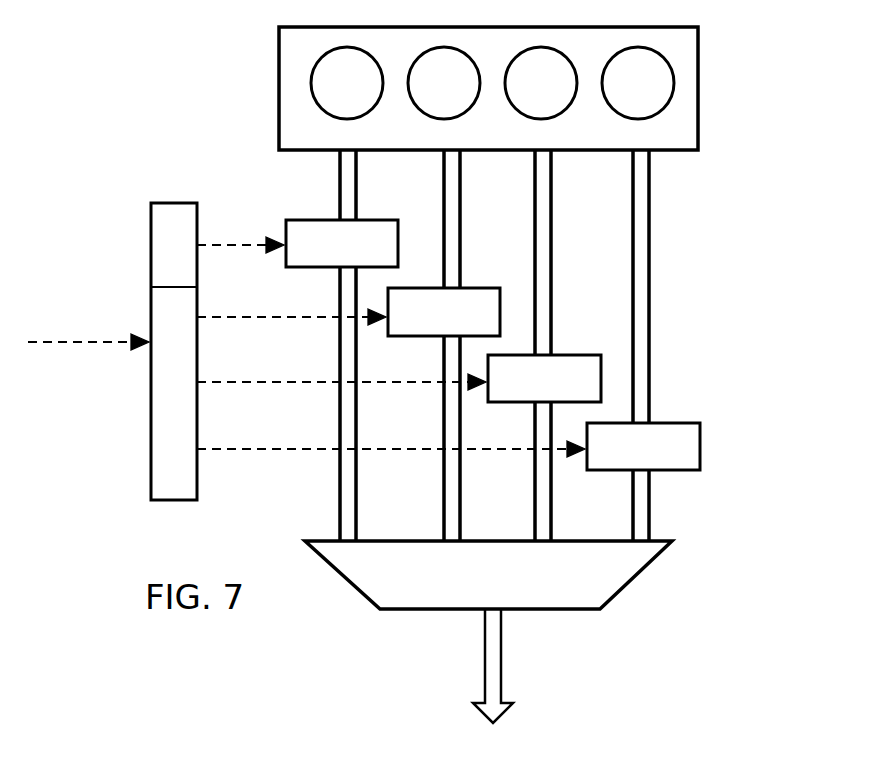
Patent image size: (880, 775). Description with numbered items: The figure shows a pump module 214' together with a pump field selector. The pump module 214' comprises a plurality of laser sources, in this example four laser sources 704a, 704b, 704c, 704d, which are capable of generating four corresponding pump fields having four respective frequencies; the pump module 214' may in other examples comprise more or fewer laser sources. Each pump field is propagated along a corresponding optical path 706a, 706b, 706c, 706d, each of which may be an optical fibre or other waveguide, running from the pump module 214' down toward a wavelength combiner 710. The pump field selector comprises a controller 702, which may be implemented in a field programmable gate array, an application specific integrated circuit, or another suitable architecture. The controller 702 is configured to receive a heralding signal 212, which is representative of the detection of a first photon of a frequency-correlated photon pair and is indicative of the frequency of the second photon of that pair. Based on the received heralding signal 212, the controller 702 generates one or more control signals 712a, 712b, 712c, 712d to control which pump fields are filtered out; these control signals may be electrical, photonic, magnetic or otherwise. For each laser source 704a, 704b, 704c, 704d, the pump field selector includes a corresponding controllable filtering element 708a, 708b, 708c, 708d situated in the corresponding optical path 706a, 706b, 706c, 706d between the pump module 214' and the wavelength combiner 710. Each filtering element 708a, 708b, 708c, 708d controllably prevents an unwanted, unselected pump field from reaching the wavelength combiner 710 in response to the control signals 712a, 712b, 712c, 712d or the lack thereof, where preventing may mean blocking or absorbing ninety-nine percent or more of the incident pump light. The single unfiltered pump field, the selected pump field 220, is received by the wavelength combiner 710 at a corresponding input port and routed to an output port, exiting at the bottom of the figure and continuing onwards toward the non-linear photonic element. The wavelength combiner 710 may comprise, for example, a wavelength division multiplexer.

The pump module 214' is at (547, 88).
The laser source 704a is at (347, 83).
The laser source 704b is at (444, 83).
The laser source 704c is at (541, 83).
The laser source 704d is at (638, 83).
The optical path 706a is at (338, 211).
The optical path 706b is at (442, 230).
The optical path 706c is at (533, 235).
The optical path 706d is at (631, 238).
The controllable filtering element 708a is at (342, 243).
The controllable filtering element 708b is at (444, 312).
The controllable filtering element 708c is at (544, 378).
The controllable filtering element 708d is at (643, 446).
The controller 702 is at (174, 351).
The control signal 712a is at (240, 231).
The control signal 712b is at (291, 305).
The control signal 712c is at (341, 370).
The control signal 712d is at (391, 439).
The heralding signal 212 is at (88, 328).
The wavelength combiner 710 is at (627, 586).
The selected pump field 220 is at (505, 660).